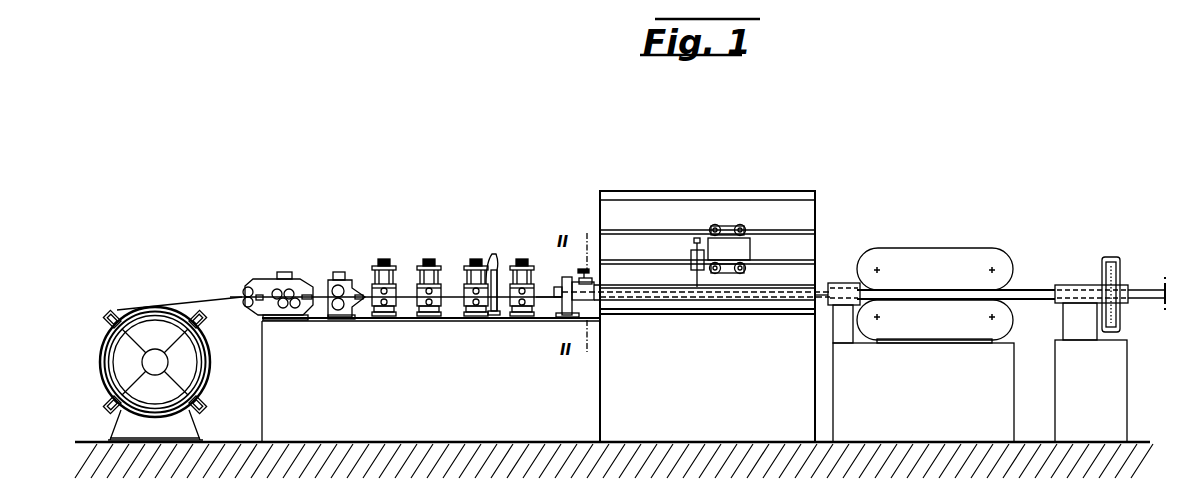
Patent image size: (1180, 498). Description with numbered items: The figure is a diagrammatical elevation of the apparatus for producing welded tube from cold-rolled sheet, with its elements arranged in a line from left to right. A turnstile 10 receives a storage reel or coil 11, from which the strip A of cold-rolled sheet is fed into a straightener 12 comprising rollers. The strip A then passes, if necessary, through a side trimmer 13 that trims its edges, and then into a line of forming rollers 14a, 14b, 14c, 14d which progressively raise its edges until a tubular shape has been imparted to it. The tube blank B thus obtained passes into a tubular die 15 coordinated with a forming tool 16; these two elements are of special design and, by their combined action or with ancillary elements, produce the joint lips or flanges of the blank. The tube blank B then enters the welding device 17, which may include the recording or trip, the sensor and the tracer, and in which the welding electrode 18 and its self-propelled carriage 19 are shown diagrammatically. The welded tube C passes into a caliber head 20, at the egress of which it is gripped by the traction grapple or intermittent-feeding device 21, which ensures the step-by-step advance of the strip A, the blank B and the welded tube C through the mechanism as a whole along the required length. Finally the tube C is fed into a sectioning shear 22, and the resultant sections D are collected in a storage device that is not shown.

The turnstile 10 is at (102, 402).
The storage reel or coil 11 is at (100, 348).
The straightener 12 is at (265, 288).
The side trimmer 13 is at (352, 280).
The forming roller 14a is at (392, 262).
The forming roller 14b is at (438, 262).
The forming roller 14c is at (485, 262).
The forming roller 14d is at (532, 262).
The tubular die 15 is at (556, 316).
The forming tool 16 is at (592, 273).
The welding device 17 is at (722, 217).
The welding electrode 18 is at (700, 280).
The self-propelled carriage 19 is at (733, 250).
The caliber head 20 is at (840, 285).
The intermittent-feeding device 21 is at (943, 268).
The sectioning shear 22 is at (1108, 257).
The strip A is at (226, 297).
The tube blank B is at (534, 316).
The welded tube C is at (824, 287).
The tube sections D is at (1153, 293).